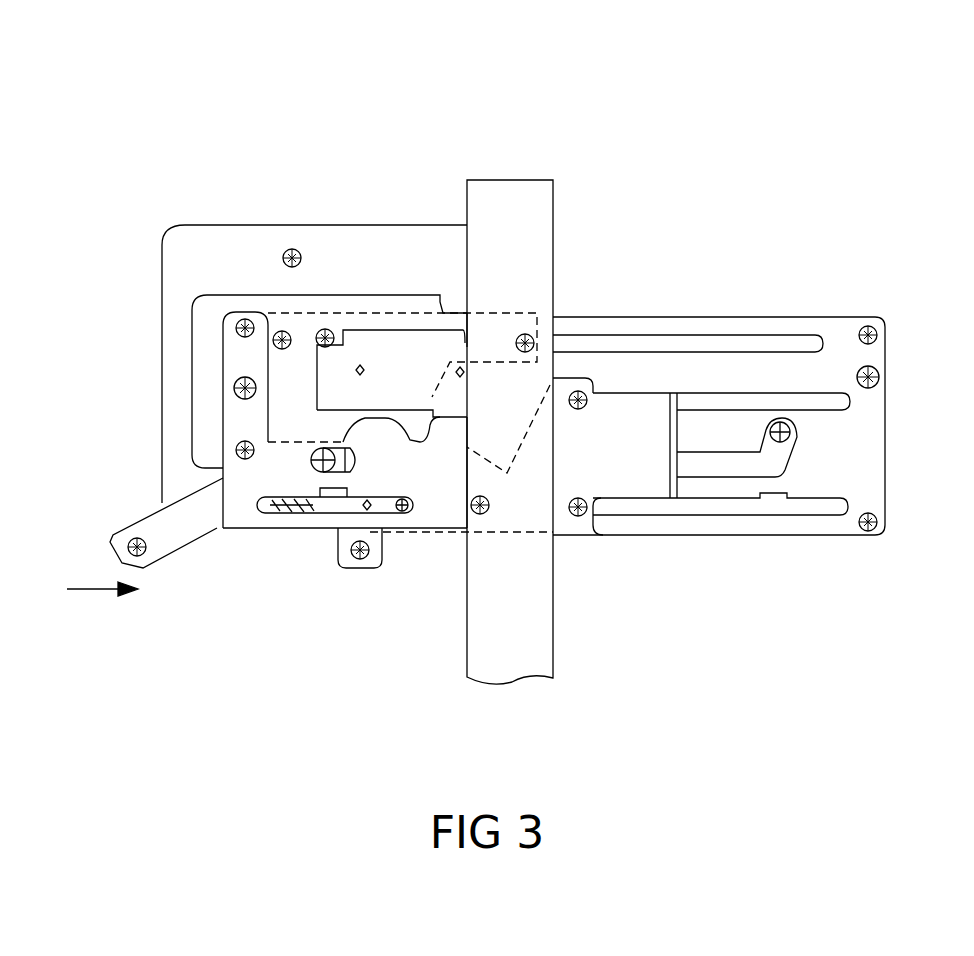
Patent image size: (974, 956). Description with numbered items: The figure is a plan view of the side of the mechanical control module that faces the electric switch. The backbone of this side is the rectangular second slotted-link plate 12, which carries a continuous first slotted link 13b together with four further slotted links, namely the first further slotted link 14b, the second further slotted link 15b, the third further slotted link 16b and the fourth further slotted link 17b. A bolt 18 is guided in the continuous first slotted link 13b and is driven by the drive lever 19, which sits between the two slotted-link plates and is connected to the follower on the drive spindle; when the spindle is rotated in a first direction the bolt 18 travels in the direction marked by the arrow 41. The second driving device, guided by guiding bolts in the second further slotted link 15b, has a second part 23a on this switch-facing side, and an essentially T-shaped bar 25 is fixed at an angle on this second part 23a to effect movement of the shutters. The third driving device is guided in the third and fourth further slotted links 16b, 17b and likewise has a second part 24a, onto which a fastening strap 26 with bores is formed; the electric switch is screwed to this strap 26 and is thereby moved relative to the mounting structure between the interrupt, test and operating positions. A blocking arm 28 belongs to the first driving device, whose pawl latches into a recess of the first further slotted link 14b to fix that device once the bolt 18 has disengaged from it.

The second slotted-link plate 12 is at (835, 318).
The continuous first slotted link 13b is at (793, 447).
The first further slotted link 14b is at (393, 487).
The second further slotted link 15b is at (730, 337).
The third further slotted link 16b is at (853, 412).
The fourth further slotted link 17b is at (810, 517).
The bolt 18 is at (303, 457).
The drive lever 19 is at (153, 512).
The second part of the second driving device 23a is at (268, 363).
The second part of the third driving device 24a is at (598, 390).
The T-shaped bar 25 is at (557, 228).
The fastening strap 26 is at (678, 488).
The blocking arm 28 is at (300, 225).
The arrow 41 is at (97, 589).